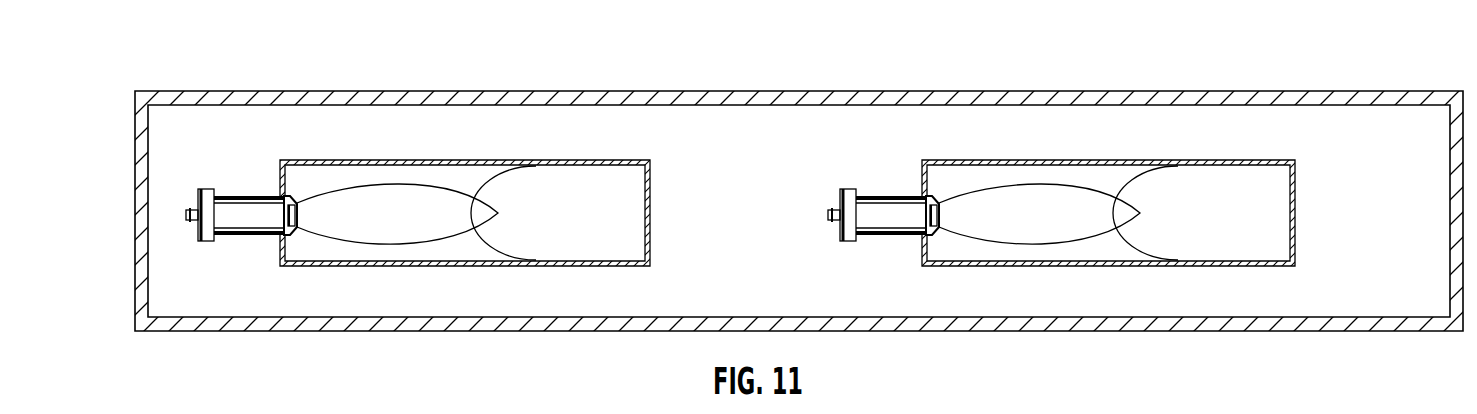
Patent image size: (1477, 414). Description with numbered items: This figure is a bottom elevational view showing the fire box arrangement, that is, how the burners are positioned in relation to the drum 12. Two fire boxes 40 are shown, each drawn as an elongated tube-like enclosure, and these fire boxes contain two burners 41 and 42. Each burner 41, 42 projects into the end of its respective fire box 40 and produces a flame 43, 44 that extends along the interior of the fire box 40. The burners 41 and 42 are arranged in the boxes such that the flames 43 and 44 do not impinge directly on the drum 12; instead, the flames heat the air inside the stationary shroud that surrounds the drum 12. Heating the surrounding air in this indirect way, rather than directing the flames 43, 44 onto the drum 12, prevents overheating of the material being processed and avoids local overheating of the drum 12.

The drum 12 is at (741, 91).
The fire box 40 is at (598, 161).
The burner 41 is at (253, 196).
The burner 42 is at (883, 178).
The flame 43 is at (432, 182).
The flame 44 is at (1058, 187).